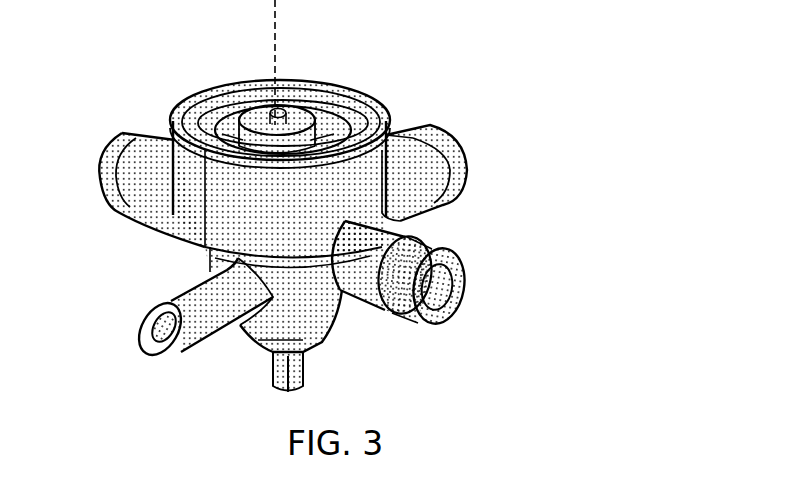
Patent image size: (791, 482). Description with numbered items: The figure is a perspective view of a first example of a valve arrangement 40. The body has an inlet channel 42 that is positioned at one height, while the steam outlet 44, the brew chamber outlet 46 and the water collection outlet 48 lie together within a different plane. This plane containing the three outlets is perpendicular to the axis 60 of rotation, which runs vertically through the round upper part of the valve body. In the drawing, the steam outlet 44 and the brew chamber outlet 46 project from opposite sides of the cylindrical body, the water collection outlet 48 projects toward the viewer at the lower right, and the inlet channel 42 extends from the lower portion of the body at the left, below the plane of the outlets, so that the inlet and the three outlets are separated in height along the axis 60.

The valve body assembly 40 is at (498, 128).
The inlet channel 42 is at (170, 300).
The steam outlet 44 is at (110, 138).
The brew chamber outlet 46 is at (450, 137).
The water collection outlet 48 is at (465, 258).
The axis of rotation 60 is at (273, 48).